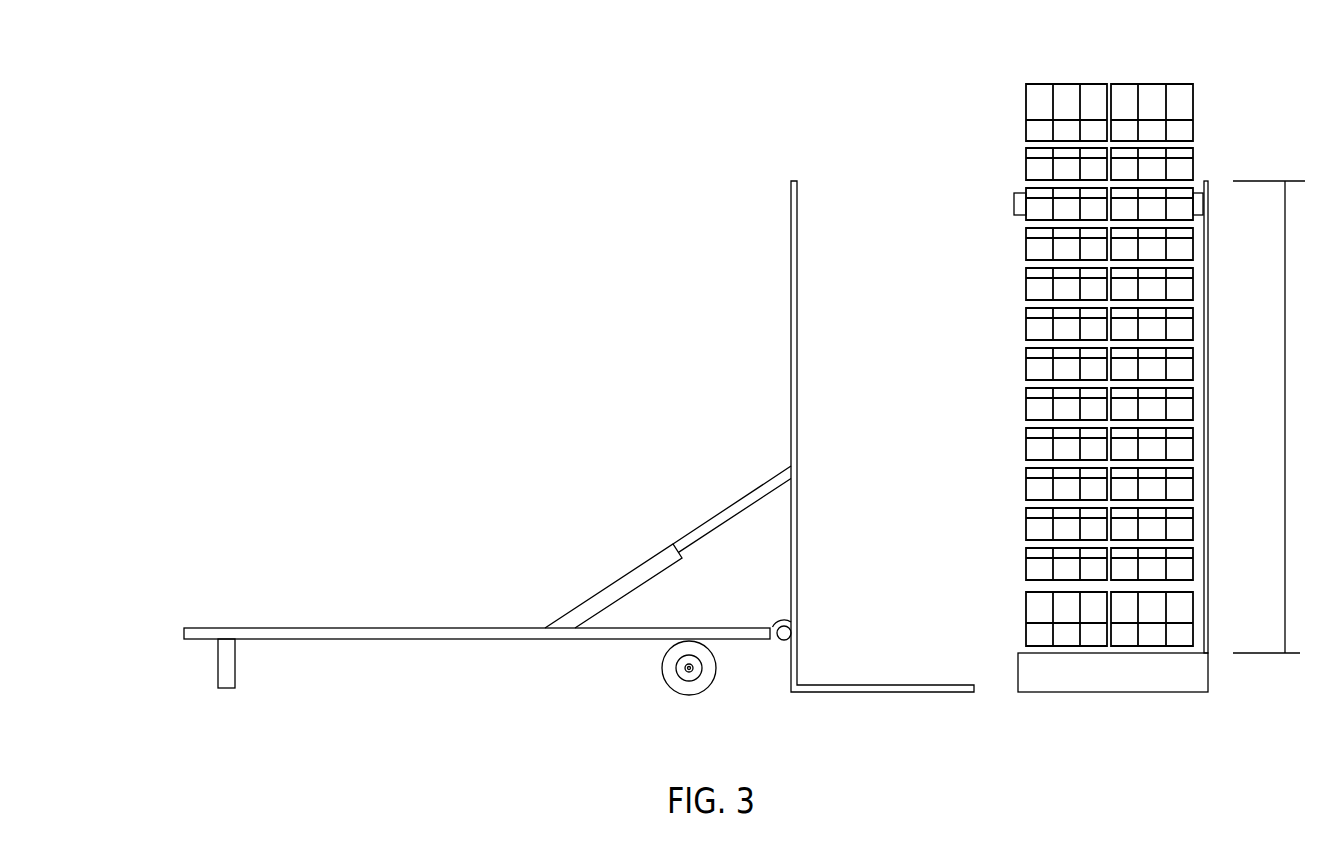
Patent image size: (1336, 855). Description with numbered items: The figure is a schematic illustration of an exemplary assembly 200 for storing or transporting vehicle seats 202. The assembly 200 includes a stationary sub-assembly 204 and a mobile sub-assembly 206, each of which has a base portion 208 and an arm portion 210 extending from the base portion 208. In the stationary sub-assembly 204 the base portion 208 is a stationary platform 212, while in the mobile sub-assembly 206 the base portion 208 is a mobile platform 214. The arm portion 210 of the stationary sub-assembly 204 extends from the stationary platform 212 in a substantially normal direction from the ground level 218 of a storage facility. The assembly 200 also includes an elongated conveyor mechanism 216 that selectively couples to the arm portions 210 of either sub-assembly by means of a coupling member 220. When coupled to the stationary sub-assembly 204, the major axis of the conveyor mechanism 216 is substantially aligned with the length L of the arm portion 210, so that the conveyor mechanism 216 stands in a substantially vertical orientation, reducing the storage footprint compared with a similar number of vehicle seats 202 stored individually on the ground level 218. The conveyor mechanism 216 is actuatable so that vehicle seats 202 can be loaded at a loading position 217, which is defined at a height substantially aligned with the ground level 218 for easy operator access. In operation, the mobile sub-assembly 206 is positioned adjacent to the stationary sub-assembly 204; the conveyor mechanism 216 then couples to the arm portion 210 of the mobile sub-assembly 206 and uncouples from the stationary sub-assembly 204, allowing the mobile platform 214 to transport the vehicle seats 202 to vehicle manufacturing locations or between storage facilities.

The assembly 200 is at (295, 110).
The vehicle seats 202 is at (1068, 84).
The stationary sub-assembly 204 is at (1218, 92).
The mobile sub-assembly 206 is at (405, 452).
The base portion 208 is at (470, 677).
The arm portion 210 is at (791, 428).
The stationary platform 212 is at (1198, 668).
The mobile platform 214 is at (420, 627).
The conveyor mechanism 216 is at (1220, 138).
The loading position 217 is at (1012, 654).
The ground level 218 is at (198, 575).
The coupling member 220 is at (1017, 193).
The length of arm portion L is at (1285, 332).